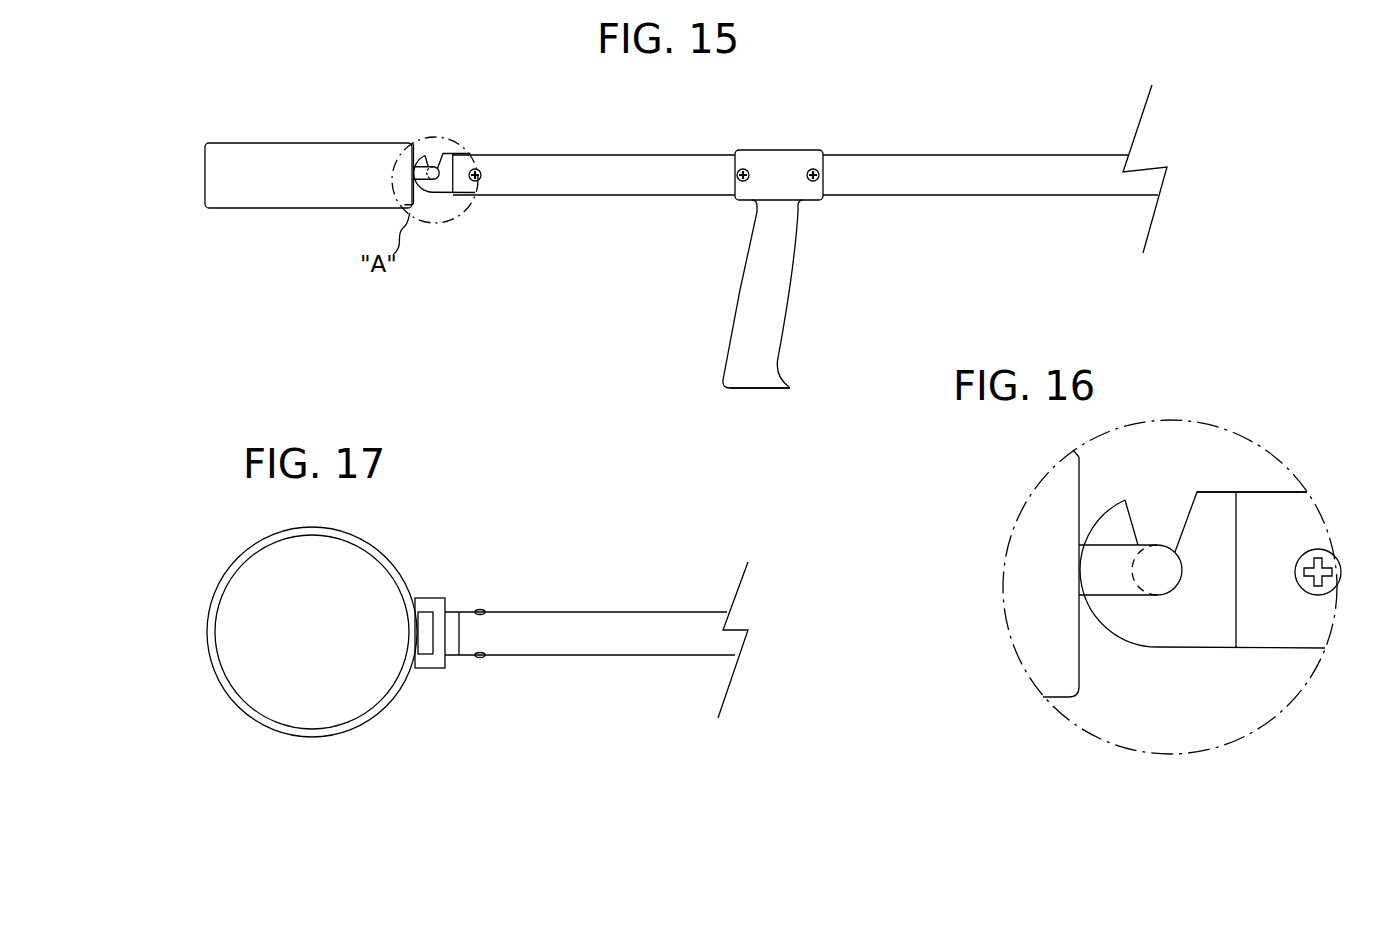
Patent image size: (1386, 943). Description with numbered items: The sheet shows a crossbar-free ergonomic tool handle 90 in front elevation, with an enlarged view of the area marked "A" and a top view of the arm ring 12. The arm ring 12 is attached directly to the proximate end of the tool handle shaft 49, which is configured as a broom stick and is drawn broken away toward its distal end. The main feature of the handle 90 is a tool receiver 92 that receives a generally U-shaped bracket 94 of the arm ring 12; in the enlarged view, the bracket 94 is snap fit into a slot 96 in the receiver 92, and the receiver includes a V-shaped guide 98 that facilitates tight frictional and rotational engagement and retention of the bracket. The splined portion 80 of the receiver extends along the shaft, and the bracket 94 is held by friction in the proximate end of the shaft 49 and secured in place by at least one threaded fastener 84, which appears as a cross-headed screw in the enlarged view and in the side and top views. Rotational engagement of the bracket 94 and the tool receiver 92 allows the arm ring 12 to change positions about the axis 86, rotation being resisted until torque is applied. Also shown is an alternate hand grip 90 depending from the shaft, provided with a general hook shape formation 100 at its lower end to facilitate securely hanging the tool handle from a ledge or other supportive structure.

In FIG. 15, the arm ring 12 is at (275, 160).
In FIG. 16, the arm ring 12 is at (1040, 658).
In FIG. 17, the arm ring 12 is at (250, 562).
In FIG. 15, the shaft 49 is at (628, 166).
In FIG. 17, the shaft 49 is at (622, 628).
In FIG. 16, the splined portion 80 is at (1287, 508).
In FIG. 15, the threaded fastener 84 is at (483, 176).
In FIG. 16, the threaded fastener 84 is at (1320, 549).
In FIG. 17, the threaded fastener 84 is at (480, 611).
In FIG. 17, the axis 86 is at (452, 643).
In FIG. 15, the ergonomic tool handle 90 is at (402, 48).
In FIG. 15, the tool receiver 92 is at (447, 190).
In FIG. 16, the tool receiver 92 is at (1197, 628).
In FIG. 15, the U-shaped bracket 94 is at (423, 162).
In FIG. 16, the U-shaped bracket 94 is at (1115, 580).
In FIG. 17, the U-shaped bracket 94 is at (425, 605).
In FIG. 16, the slot 96 is at (1170, 520).
In FIG. 16, the V-shaped guide 98 is at (1213, 478).
In FIG. 15, the hook shape formation 100 is at (790, 387).